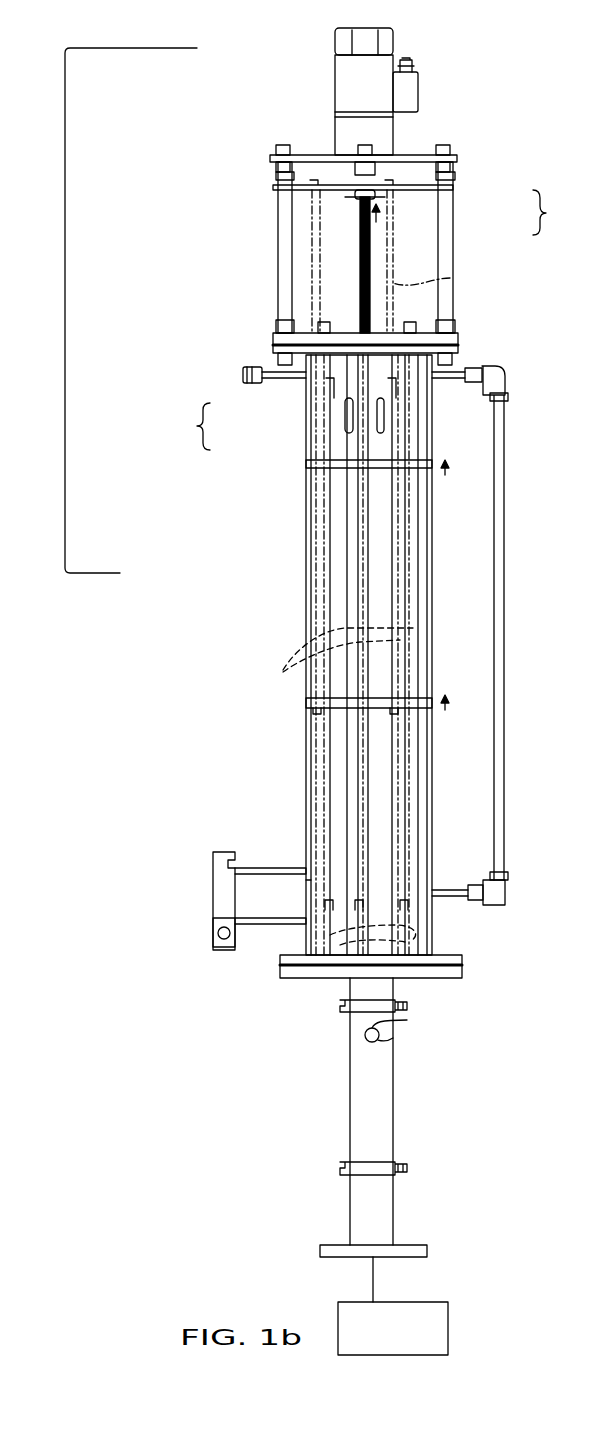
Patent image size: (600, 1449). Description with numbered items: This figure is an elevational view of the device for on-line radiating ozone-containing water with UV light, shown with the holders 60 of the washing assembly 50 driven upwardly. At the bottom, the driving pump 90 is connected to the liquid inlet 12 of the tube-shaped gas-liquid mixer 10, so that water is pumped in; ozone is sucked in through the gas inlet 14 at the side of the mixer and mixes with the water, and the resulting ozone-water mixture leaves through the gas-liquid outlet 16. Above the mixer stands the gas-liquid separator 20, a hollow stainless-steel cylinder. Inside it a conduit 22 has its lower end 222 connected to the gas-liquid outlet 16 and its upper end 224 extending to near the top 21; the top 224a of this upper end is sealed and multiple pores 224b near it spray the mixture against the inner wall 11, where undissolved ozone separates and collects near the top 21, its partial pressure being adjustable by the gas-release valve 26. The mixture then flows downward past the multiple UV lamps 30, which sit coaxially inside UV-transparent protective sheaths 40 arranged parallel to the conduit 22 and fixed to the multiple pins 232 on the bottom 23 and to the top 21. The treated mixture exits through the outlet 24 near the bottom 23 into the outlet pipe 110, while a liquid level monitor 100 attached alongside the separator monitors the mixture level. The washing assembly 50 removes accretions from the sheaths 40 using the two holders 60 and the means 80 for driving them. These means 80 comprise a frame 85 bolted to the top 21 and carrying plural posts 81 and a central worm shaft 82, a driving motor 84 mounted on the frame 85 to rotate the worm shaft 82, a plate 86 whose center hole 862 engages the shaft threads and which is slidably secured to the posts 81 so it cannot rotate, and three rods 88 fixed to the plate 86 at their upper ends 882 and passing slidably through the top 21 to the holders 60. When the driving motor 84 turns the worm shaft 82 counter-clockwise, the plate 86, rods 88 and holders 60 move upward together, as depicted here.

The gas-liquid mixer 10 is at (430, 1103).
The inner wall 11 is at (424, 507).
The liquid inlet 12 is at (380, 1257).
The gas inlet 14 is at (388, 1035).
The gas-liquid outlet 16 is at (376, 978).
The gas-liquid separator 20 is at (290, 568).
The top 21 is at (458, 348).
The conduit 22 is at (306, 522).
The bottom 23 is at (460, 963).
The outlet 24 is at (306, 892).
The gas-release valve 26 is at (255, 366).
The UV lamps 30 is at (310, 655).
The protective sheaths 40 is at (410, 770).
The washing assembly 50 is at (65, 288).
The holders 60 is at (306, 466).
The means for driving the two holders 80 is at (275, 96).
The posts 81 is at (446, 228).
The worm shaft 82 is at (368, 250).
The driving motor 84 is at (395, 30).
The frame 85 is at (557, 212).
The plate 86 is at (455, 188).
The rods 88 is at (450, 278).
The driving pump 90 is at (443, 1322).
The liquid level monitor 100 is at (504, 638).
The outlet pipe 110 is at (213, 877).
The lower end 222 is at (382, 953).
The upper end 224 is at (179, 426).
The top 224a is at (348, 396).
The pores 224b is at (350, 427).
The pins 232 is at (440, 895).
The center hole 862 is at (352, 200).
The upper ends 882 is at (372, 176).